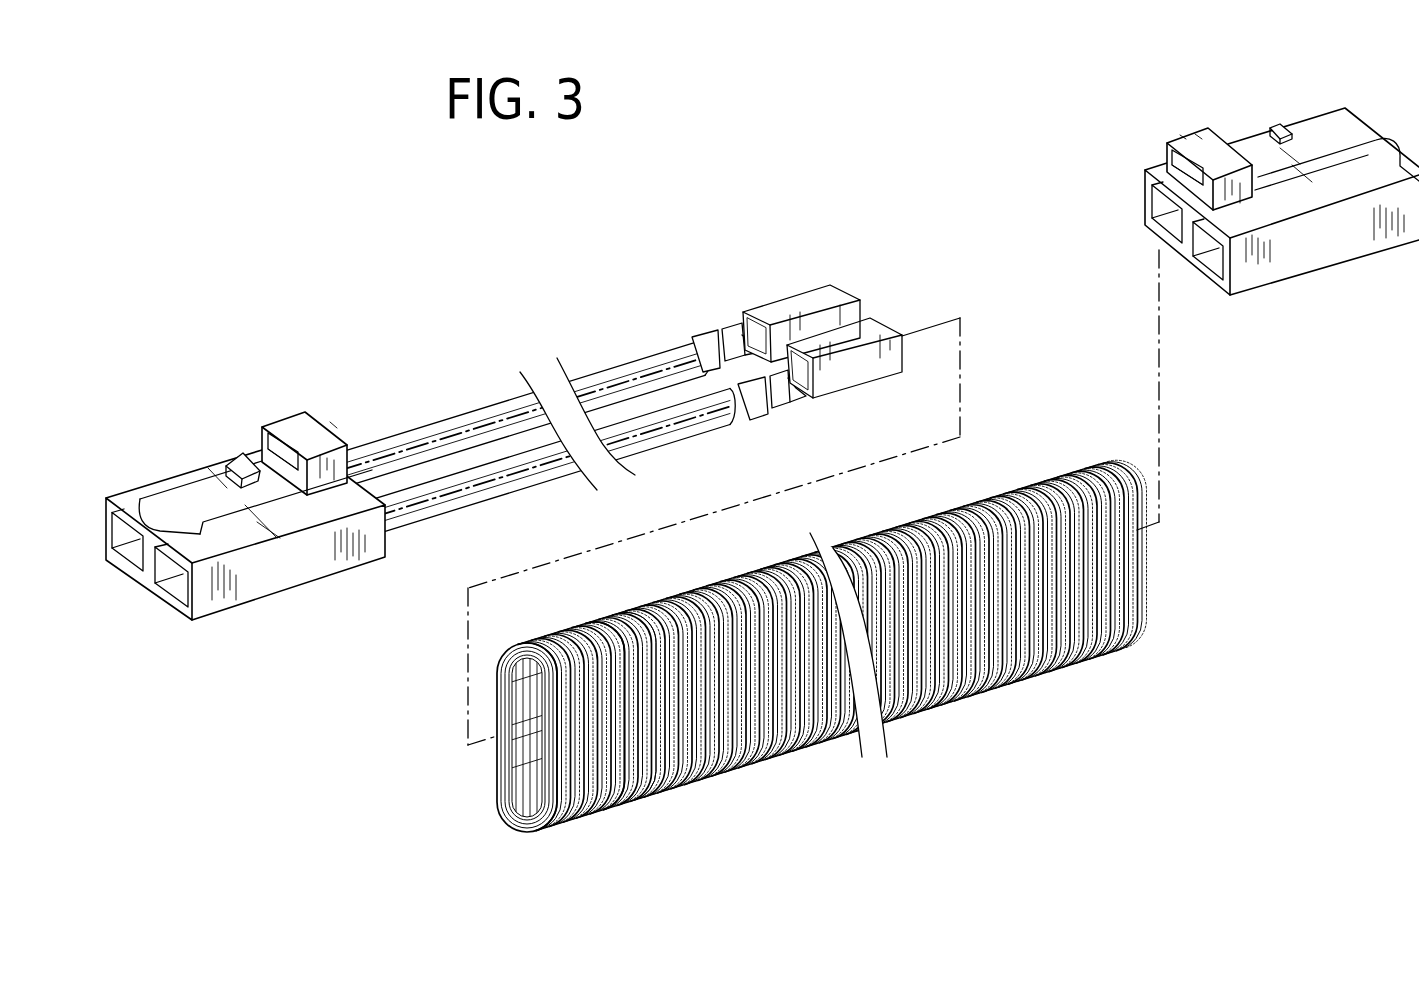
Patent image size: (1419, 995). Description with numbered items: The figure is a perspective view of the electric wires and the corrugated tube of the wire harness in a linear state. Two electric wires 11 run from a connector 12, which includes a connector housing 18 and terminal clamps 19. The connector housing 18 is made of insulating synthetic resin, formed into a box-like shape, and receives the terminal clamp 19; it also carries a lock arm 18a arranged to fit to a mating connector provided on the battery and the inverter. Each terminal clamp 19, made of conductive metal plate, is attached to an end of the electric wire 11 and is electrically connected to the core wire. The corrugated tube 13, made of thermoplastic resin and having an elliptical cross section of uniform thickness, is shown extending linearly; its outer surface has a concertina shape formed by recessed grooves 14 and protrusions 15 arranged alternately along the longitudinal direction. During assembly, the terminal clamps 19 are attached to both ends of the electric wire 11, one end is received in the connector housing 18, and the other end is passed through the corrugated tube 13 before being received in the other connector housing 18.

The electric wire 11 is at (460, 436).
The connector 12 is at (762, 378).
The corrugated tube 13 is at (829, 752).
The recessed groove 14 is at (580, 630).
The protrusion 15 is at (625, 630).
The connector housing 18 is at (318, 564).
The lock arm 18a is at (199, 495).
The terminal clamp 19 is at (831, 338).